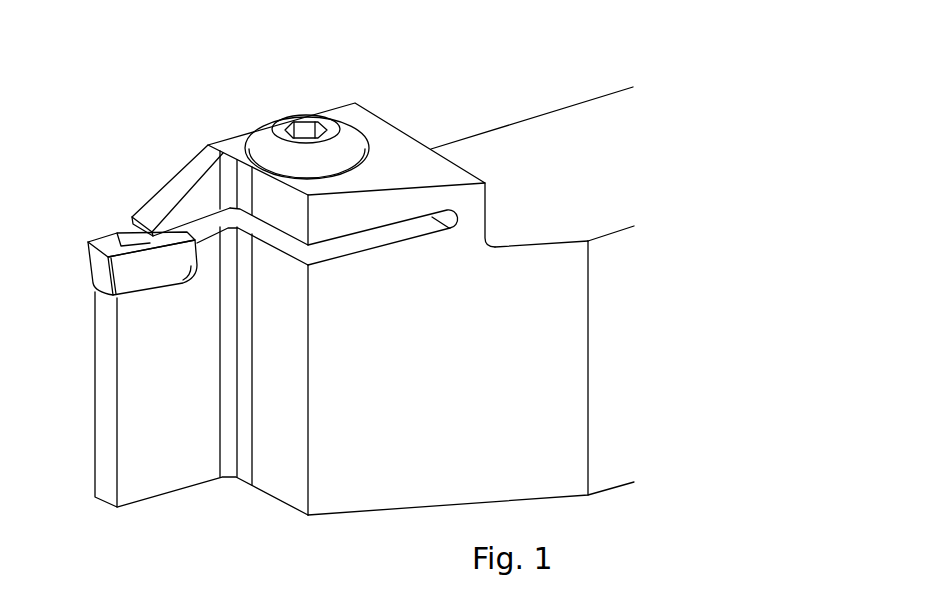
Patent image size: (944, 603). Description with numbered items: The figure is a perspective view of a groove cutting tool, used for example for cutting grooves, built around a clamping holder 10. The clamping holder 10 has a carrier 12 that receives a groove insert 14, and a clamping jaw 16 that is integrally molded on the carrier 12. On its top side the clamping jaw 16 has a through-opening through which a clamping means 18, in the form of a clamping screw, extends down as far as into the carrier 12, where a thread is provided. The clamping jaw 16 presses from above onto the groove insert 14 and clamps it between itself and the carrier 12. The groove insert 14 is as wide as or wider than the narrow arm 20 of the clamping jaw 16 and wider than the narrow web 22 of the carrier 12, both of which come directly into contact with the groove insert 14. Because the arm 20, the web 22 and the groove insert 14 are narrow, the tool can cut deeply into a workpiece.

The clamping holder 10 is at (506, 407).
The carrier 12 is at (413, 490).
The groove insert 14 is at (98, 232).
The clamping jaw 16 is at (197, 153).
The clamping means 18 is at (333, 125).
The narrow arm 20 is at (172, 188).
The narrow web 22 is at (166, 477).